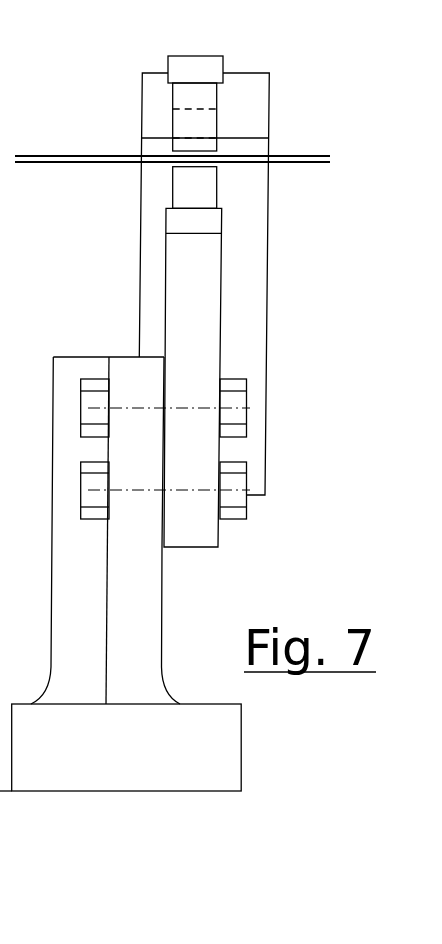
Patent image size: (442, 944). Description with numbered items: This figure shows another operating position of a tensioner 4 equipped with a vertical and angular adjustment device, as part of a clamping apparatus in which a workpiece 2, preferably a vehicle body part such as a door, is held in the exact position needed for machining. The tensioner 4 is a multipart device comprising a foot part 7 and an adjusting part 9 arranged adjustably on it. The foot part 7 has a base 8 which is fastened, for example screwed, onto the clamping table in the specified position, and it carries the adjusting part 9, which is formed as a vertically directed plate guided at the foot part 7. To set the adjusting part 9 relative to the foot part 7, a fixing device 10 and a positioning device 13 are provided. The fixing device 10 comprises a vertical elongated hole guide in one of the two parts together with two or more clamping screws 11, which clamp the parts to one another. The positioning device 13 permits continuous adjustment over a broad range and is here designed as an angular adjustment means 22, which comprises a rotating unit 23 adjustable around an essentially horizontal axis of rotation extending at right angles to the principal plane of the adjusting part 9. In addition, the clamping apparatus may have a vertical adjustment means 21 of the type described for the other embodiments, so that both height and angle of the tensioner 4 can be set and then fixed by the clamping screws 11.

The workpiece 2 is at (298, 155).
The tensioner 4 is at (245, 103).
The foot part 7 is at (142, 605).
The base 8 is at (226, 748).
The adjusting part 9 is at (200, 283).
The fixing device 10 is at (273, 284).
The clamping screws 11 is at (204, 284).
The positioning device 13 is at (259, 481).
The vertical adjustment means 21 is at (165, 449).
The angular adjustment means 22 is at (165, 449).
The rotating unit 23 is at (165, 449).